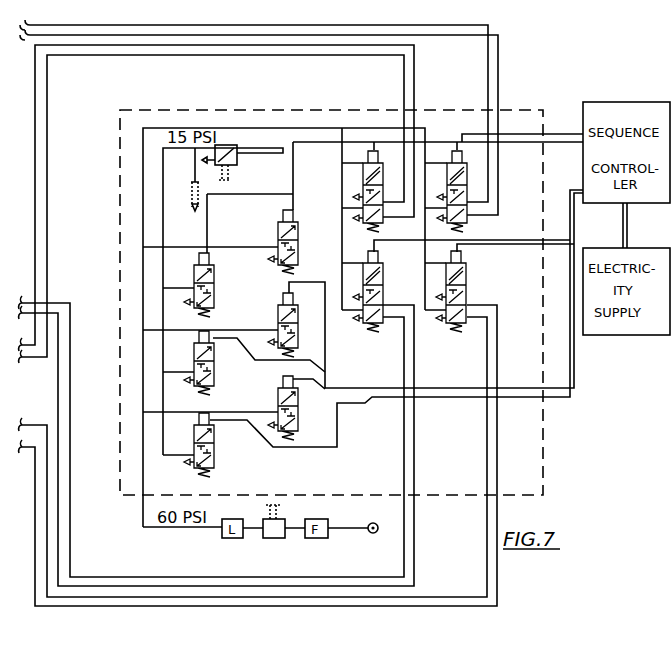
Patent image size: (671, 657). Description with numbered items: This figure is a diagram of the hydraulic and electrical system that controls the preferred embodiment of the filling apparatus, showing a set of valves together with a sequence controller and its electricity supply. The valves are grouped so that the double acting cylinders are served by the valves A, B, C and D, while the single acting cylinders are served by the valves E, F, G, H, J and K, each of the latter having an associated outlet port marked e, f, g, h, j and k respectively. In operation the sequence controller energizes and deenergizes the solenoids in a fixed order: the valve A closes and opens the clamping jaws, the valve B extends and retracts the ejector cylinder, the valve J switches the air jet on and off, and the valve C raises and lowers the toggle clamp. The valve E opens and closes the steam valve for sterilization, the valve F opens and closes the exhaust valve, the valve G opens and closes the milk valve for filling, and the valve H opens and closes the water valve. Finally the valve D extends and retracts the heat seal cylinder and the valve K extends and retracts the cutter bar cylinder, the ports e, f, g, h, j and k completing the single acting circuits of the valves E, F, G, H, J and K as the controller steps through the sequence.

The solenoid valve A is at (376, 191).
The solenoid valve B is at (376, 291).
The solenoid valve C is at (460, 191).
The solenoid valve D is at (461, 291).
The solenoid valve E is at (213, 445).
The solenoid valve F is at (213, 363).
The solenoid valve G is at (299, 408).
The solenoid valve H is at (214, 285).
The solenoid valve J is at (295, 325).
The solenoid valve K is at (300, 242).
The exhaust port of valve E e is at (214, 460).
The exhaust port of valve F f is at (214, 375).
The exhaust port of valve G g is at (298, 418).
The exhaust port of valve H h is at (214, 296).
The exhaust port of valve J j is at (298, 338).
The exhaust port of valve K k is at (298, 254).